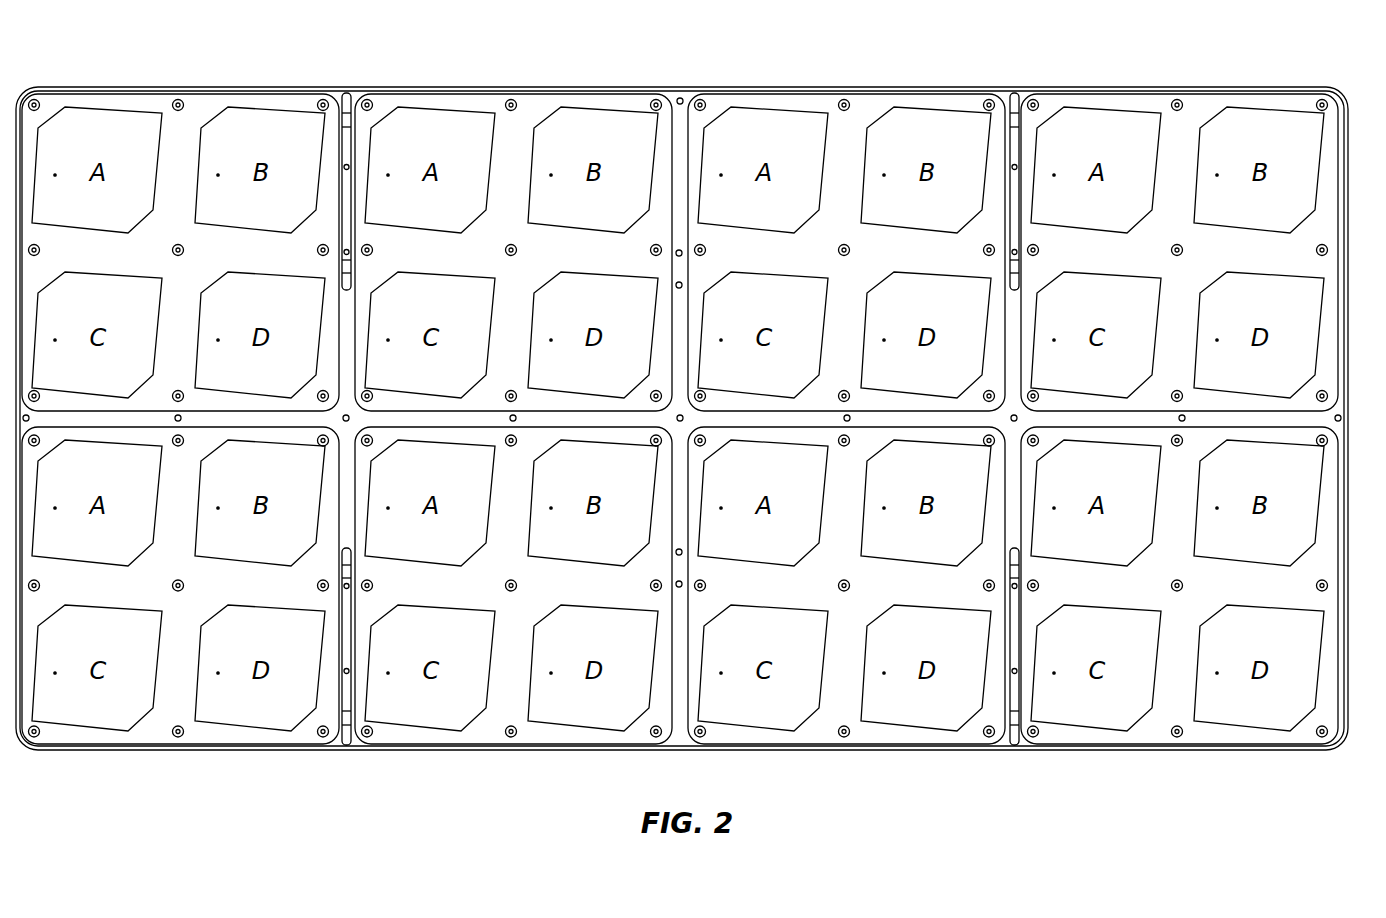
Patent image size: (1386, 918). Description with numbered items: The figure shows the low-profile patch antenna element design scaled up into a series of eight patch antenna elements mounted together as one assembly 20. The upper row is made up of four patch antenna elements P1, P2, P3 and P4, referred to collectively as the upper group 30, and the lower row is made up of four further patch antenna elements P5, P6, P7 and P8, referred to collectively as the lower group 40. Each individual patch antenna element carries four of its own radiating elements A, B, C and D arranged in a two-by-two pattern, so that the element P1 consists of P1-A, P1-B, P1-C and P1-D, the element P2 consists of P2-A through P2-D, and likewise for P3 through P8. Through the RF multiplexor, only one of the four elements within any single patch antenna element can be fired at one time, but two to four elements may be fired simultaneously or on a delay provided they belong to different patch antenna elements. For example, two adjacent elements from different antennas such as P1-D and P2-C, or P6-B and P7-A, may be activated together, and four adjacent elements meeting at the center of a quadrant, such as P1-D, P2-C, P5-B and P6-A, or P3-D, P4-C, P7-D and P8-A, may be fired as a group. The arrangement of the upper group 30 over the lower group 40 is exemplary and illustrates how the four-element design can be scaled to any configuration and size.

The modular display panel assembly 20 is at (681, 98).
The upper patch antenna elements 30 is at (1323, 268).
The lower patch antenna elements 40 is at (1322, 600).
The patch antenna element P1 is at (158, 103).
The patch antenna element P2 is at (492, 103).
The patch antenna element P3 is at (825, 103).
The patch antenna element P4 is at (1160, 103).
The patch antenna element P5 is at (160, 738).
The patch antenna element P6 is at (494, 738).
The patch antenna element P7 is at (827, 738).
The patch antenna element P8 is at (1160, 738).